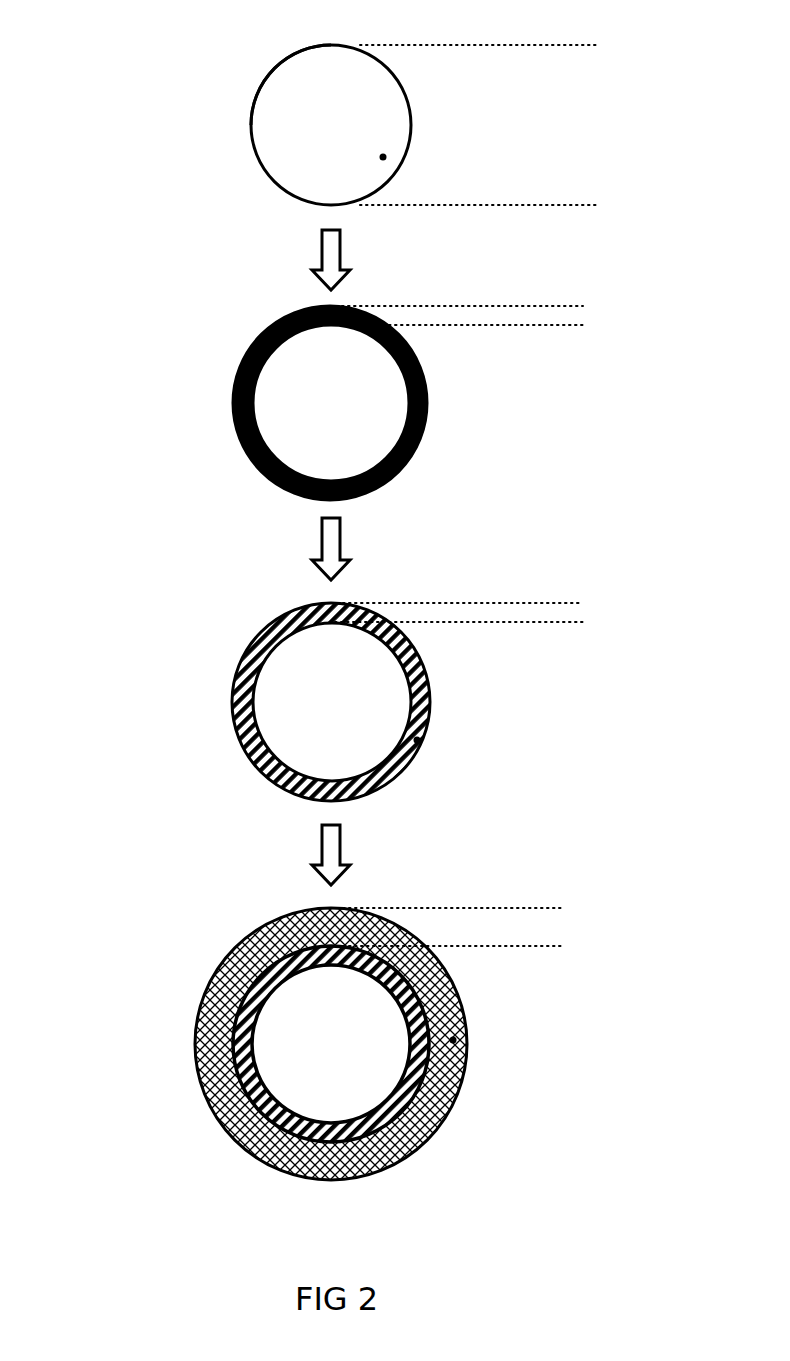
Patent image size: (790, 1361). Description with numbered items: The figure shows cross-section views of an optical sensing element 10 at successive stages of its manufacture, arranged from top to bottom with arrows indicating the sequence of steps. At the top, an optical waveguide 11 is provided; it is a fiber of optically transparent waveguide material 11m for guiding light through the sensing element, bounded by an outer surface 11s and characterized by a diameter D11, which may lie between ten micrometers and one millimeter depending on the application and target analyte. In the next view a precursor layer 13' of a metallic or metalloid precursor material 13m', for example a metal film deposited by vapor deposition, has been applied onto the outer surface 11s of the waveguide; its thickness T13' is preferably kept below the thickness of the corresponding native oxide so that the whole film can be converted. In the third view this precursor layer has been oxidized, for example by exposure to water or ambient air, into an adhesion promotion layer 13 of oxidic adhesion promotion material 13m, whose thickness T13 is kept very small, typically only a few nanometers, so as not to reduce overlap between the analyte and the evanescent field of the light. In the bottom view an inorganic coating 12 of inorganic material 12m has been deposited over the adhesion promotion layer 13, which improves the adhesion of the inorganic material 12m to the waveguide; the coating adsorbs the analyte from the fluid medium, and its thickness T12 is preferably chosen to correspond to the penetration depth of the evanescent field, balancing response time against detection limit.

The optical sensing element 10 is at (152, 880).
The optical waveguide 11 is at (345, 141).
The outer surface 11s is at (272, 67).
The waveguide material 11m is at (383, 157).
The diameter D11 is at (598, 45).
The precursor layer 13' is at (330, 403).
The precursor material 13m' is at (472, 452).
The precursor layer thickness T13' is at (495, 316).
The adhesion promotion layer 13 is at (331, 872).
The adhesion promotion material 13m is at (468, 754).
The adhesion promotion layer thickness T13 is at (493, 615).
The inorganic coating 12 is at (456, 1108).
The inorganic material 12m is at (453, 1040).
The inorganic coating thickness T12 is at (588, 908).